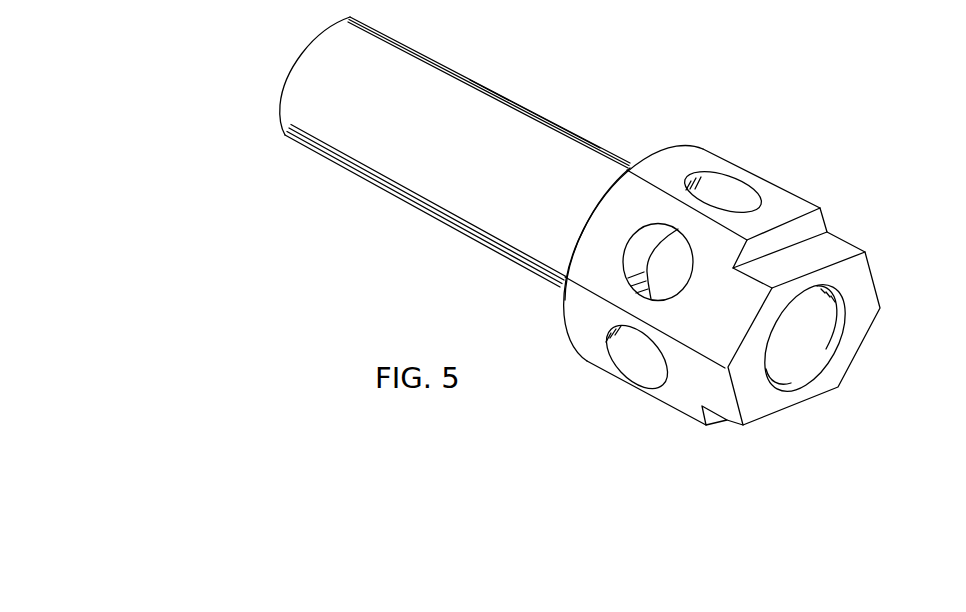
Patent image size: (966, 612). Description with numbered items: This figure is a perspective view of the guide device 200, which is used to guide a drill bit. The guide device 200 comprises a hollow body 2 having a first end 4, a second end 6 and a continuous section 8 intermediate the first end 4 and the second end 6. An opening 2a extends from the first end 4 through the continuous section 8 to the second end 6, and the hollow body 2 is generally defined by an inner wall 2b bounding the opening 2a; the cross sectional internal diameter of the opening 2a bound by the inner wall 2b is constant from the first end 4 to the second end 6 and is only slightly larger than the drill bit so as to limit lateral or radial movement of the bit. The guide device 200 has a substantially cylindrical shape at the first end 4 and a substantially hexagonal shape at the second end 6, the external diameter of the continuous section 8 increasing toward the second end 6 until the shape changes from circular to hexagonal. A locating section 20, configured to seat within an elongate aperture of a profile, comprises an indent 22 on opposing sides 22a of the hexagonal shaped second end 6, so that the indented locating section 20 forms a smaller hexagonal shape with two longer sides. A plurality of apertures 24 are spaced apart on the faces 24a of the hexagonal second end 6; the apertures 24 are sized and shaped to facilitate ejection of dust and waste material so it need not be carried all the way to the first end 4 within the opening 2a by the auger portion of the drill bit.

The hollow body 2 is at (465, 82).
The first end 4 is at (280, 113).
The second end 6 is at (585, 312).
The continuous section 8 is at (542, 145).
The locating section 20 is at (860, 274).
The indent 22 is at (808, 225).
The opposing sides 22a is at (827, 252).
The apertures 24 is at (632, 355).
The faces 24a is at (773, 203).
The opening 2a is at (808, 325).
The inner wall 2b is at (848, 306).
The guide device 200 is at (706, 269).